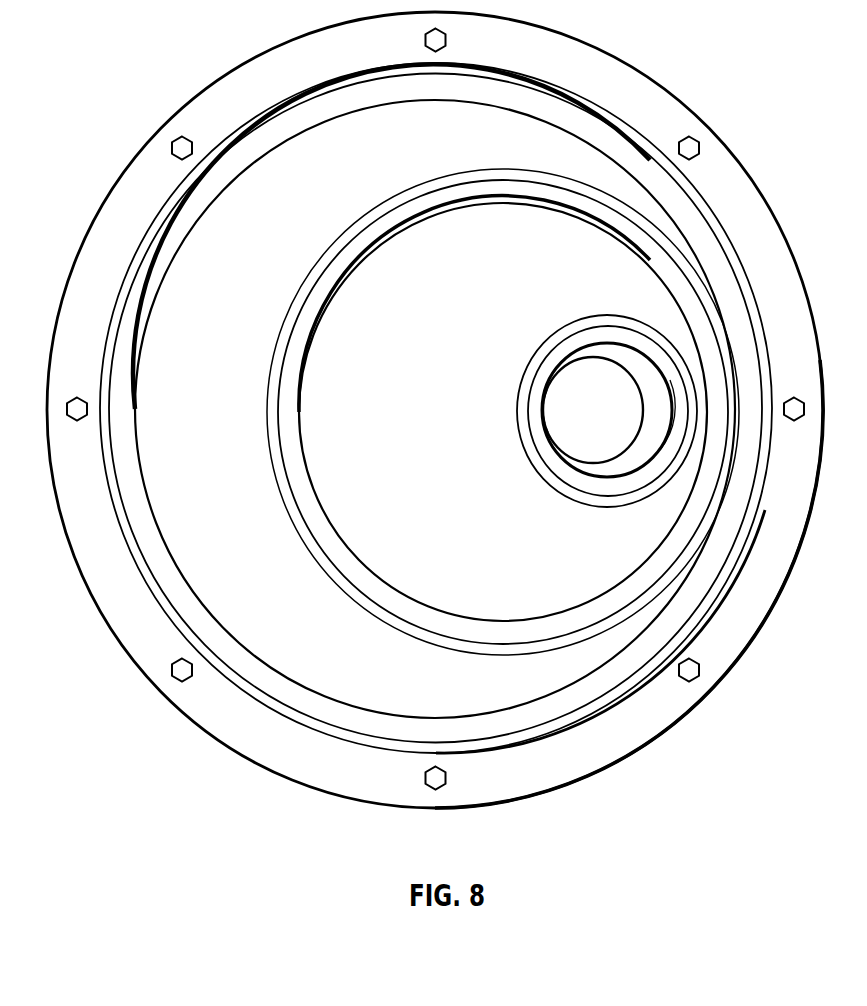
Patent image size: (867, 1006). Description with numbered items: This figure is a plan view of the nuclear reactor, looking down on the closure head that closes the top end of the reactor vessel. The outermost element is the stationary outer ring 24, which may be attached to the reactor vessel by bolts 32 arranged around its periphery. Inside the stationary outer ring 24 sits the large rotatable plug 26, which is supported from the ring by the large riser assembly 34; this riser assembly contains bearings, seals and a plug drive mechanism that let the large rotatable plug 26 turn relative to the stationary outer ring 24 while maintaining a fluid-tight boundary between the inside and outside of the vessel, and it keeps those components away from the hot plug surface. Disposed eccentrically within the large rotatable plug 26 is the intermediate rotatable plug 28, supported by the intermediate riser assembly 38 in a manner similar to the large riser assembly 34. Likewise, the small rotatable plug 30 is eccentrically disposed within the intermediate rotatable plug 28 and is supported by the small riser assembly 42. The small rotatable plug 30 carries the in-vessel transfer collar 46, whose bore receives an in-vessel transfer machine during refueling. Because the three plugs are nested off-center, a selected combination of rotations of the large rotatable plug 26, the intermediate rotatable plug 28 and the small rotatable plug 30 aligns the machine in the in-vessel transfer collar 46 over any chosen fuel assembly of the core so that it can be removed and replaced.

The stationary outer ring 24 is at (79, 260).
The bolts 32 is at (66, 409).
The large riser assembly 34 is at (146, 270).
The large rotatable plug 26 is at (190, 429).
The intermediate riser assembly 38 is at (372, 217).
The intermediate rotatable plug 28 is at (400, 439).
The small riser assembly 42 is at (553, 340).
The small rotatable plug 30 is at (670, 430).
The in-vessel transfer collar 46 is at (572, 421).